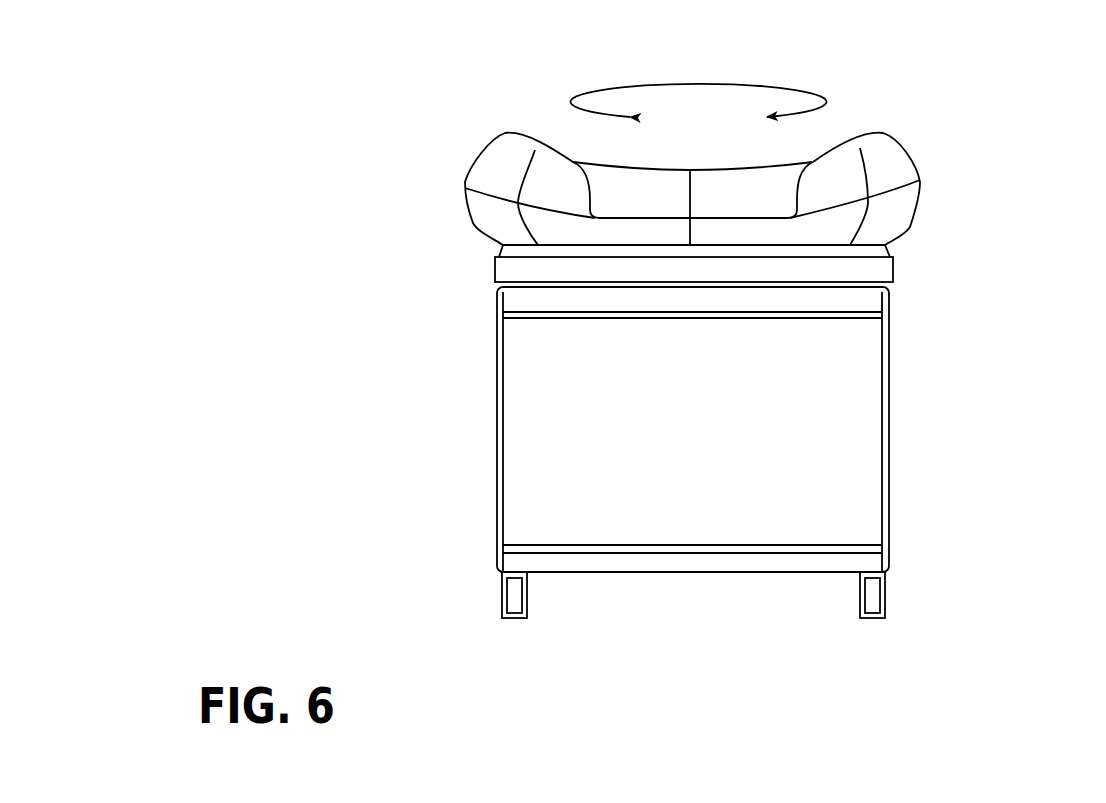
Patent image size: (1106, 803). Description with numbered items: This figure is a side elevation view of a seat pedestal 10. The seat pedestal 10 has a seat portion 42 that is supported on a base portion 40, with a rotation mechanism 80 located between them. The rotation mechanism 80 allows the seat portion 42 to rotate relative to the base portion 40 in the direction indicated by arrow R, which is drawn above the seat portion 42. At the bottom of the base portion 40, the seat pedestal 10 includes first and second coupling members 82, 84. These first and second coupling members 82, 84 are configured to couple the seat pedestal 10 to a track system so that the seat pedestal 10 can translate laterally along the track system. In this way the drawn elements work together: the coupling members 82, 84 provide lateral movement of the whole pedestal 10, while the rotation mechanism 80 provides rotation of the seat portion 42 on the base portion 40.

The seat pedestal 10 is at (996, 378).
The base portion 40 is at (900, 324).
The seat portion 42 is at (924, 161).
The rotation mechanism 80 is at (887, 268).
The first coupling member 82 is at (500, 597).
The second coupling member 84 is at (887, 590).
The arrow R is at (777, 88).